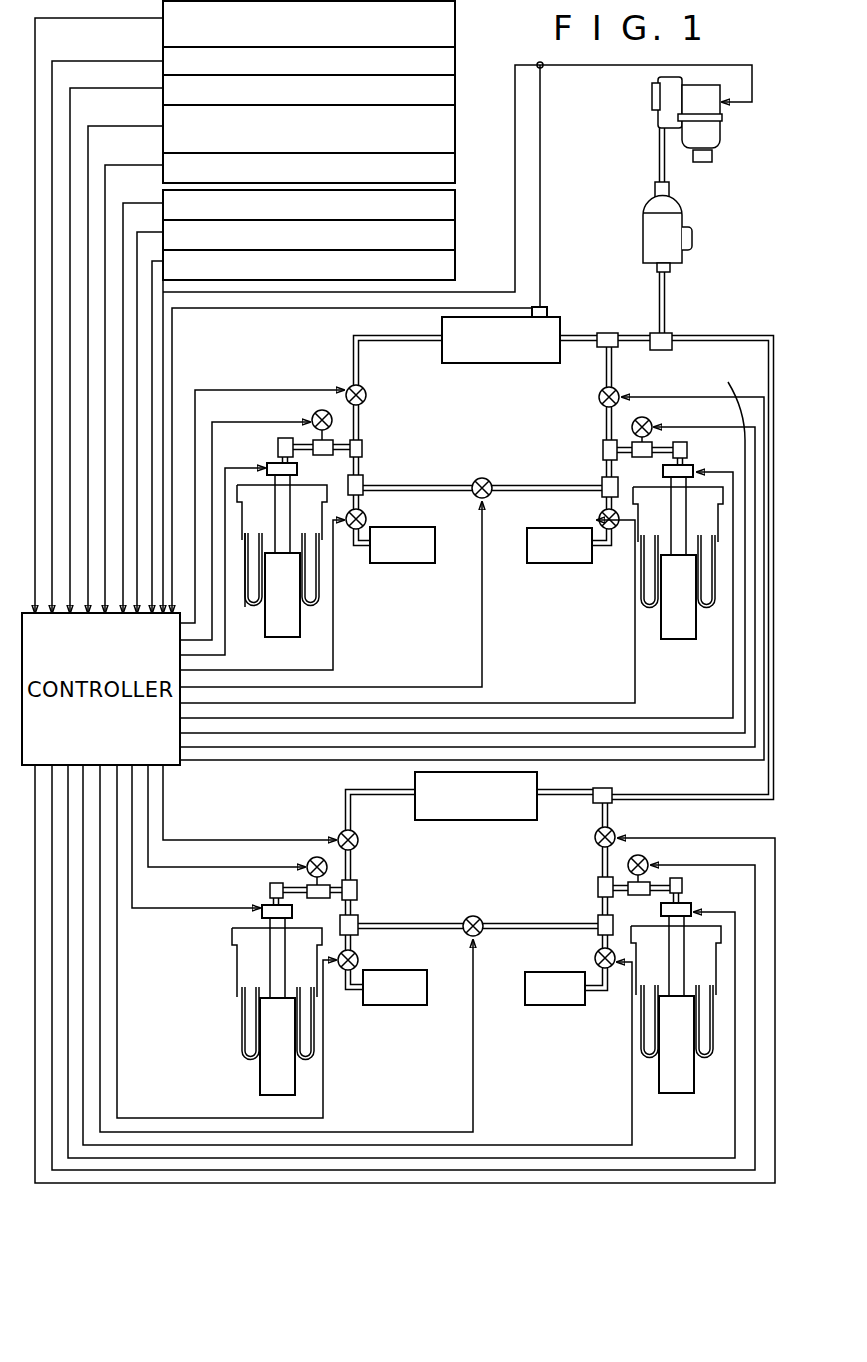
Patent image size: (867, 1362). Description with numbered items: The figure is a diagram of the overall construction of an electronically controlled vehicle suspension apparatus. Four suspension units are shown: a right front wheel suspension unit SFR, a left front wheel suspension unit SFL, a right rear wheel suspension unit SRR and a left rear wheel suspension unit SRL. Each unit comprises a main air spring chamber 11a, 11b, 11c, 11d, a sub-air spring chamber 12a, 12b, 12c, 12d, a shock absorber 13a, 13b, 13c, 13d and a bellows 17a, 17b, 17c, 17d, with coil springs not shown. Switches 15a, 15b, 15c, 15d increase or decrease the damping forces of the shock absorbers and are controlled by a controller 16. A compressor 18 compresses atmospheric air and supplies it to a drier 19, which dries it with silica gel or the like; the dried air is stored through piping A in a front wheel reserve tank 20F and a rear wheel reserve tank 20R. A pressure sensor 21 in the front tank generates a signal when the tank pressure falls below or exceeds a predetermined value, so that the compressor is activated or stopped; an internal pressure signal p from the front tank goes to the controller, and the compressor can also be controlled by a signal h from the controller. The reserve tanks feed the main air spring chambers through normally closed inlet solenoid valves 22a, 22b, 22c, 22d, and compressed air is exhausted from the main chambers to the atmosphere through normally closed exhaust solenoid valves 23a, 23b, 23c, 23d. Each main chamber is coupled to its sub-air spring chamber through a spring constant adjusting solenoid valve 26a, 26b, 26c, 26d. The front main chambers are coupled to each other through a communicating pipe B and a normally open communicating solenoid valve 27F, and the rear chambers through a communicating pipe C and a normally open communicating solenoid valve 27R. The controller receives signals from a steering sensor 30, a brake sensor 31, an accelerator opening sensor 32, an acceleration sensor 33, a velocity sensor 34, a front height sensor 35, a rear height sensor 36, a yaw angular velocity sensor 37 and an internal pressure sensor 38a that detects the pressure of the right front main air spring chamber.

The yaw angular velocity sensor 37 is at (457, 37).
The steering sensor 30 is at (457, 66).
The brake sensor 31 is at (457, 95).
The accelerator opening sensor 32 is at (457, 137).
The acceleration sensor 33 is at (457, 170).
The velocity sensor 34 is at (457, 207).
The front height sensor 35 is at (457, 236).
The rear height sensor 36 is at (457, 266).
The compressor 18 is at (718, 152).
The drier 19 is at (692, 224).
The pressure sensor 21 is at (548, 308).
The front wheel reserve tank 20F is at (502, 363).
The rear wheel reserve tank 20R is at (499, 820).
The inlet solenoid valve 22a is at (598, 398).
The inlet solenoid valve 22b is at (367, 397).
The inlet solenoid valve 22c is at (594, 840).
The inlet solenoid valve 22d is at (359, 843).
The exhaust solenoid valve 23a is at (638, 421).
The exhaust solenoid valve 23b is at (298, 414).
The exhaust solenoid valve 23c is at (647, 856).
The exhaust solenoid valve 23d is at (304, 854).
The spring constant adjusting solenoid valve 26a is at (598, 520).
The spring constant adjusting solenoid valve 26b is at (367, 519).
The spring constant adjusting solenoid valve 26c is at (592, 958).
The spring constant adjusting solenoid valve 26d is at (359, 960).
The communicating solenoid valve 27F is at (482, 479).
The communicating solenoid valve 27R is at (474, 915).
The sub-air spring chamber 12a is at (552, 563).
The sub-air spring chamber 12b is at (408, 563).
The sub-air spring chamber 12c is at (572, 1005).
The sub-air spring chamber 12d is at (393, 1005).
The switch 15a is at (688, 458).
The switch 15b is at (284, 454).
The switch 15c is at (688, 904).
The switch 15d is at (262, 910).
The main air spring chamber 11a is at (655, 551).
The main air spring chamber 11b is at (306, 555).
The main air spring chamber 11c is at (648, 1003).
The main air spring chamber 11d is at (248, 1002).
The shock absorber 13a is at (672, 645).
The shock absorber 13b is at (283, 637).
The shock absorber 13c is at (674, 1096).
The shock absorber 13d is at (266, 1099).
The bellows 17a is at (710, 604).
The bellows 17b is at (318, 600).
The bellows 17c is at (711, 1052).
The bellows 17d is at (317, 1051).
The controller 16 is at (202, 638).
The internal pressure sensor 38a is at (462, 548).
The signal h is at (163, 362).
The internal pressure signal p is at (173, 326).
The piping A is at (620, 333).
The communicating pipe B is at (420, 485).
The communicating pipe C is at (408, 922).
The left front wheel suspension unit SFL is at (244, 479).
The right front wheel suspension unit SFR is at (714, 484).
The left rear wheel suspension unit SRL is at (236, 918).
The right rear wheel suspension unit SRR is at (711, 926).